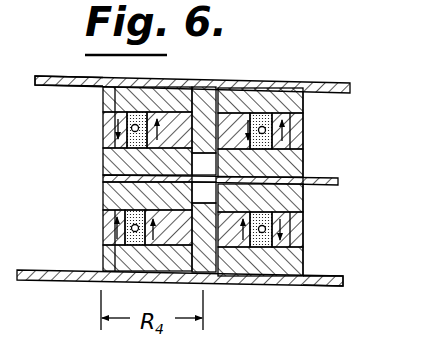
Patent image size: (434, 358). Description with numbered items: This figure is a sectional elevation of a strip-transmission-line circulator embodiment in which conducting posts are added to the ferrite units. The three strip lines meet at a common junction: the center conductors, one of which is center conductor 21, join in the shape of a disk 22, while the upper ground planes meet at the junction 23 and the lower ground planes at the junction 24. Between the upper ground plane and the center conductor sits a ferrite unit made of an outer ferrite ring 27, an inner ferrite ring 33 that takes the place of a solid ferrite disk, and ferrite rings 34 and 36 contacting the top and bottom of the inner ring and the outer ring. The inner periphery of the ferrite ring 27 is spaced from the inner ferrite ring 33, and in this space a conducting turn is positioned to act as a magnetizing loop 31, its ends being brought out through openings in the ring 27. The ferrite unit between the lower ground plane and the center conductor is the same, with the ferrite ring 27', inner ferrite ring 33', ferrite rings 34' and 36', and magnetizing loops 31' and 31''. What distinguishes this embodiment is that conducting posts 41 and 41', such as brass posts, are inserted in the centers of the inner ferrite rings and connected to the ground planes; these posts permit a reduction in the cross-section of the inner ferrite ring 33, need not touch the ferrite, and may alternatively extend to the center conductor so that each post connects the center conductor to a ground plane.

The center conductor 21 is at (318, 176).
The disk 22 is at (103, 177).
The junction of the upper ground planes 23 is at (266, 80).
The junction of the lower ground planes 24 is at (307, 285).
The ferrite ring 27 is at (312, 131).
The ferrite ring 27' is at (313, 229).
The magnetizing loop 31 is at (101, 119).
The magnetizing loop 31' is at (300, 121).
The magnetizing loop 31'' is at (213, 264).
The inner ferrite ring 33 is at (206, 91).
The inner ferrite ring 33' is at (197, 260).
The ferrite ring 34 is at (75, 72).
The ferrite ring 34' is at (330, 265).
The ferrite ring 36 is at (87, 120).
The ferrite ring 36' is at (230, 229).
The conducting post 41 is at (202, 113).
The conducting post 41' is at (217, 249).